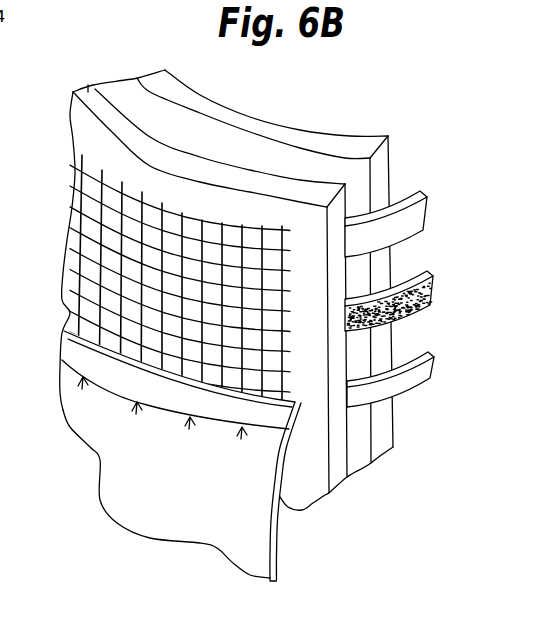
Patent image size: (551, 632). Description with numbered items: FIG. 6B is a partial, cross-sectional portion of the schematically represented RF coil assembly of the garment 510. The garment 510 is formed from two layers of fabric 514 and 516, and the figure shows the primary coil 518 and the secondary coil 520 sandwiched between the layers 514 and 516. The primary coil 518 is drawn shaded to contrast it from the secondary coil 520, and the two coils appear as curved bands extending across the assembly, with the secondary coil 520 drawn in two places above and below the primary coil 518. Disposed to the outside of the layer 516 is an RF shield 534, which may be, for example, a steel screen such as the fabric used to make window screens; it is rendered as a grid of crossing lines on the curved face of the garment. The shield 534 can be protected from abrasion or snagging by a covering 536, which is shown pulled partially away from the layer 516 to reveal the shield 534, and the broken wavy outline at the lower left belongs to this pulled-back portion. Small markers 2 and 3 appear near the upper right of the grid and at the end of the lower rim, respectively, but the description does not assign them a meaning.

The garment 510 is at (222, 107).
The layer of fabric 514 is at (348, 147).
The layer of fabric 516 is at (86, 89).
The primary coil 518 is at (433, 290).
The secondary coil 520 is at (428, 212).
The RF shield 534 is at (70, 313).
The covering 536 is at (277, 562).
The grid region marker 2 is at (185, 287).
The lower rim marker 3 is at (188, 376).